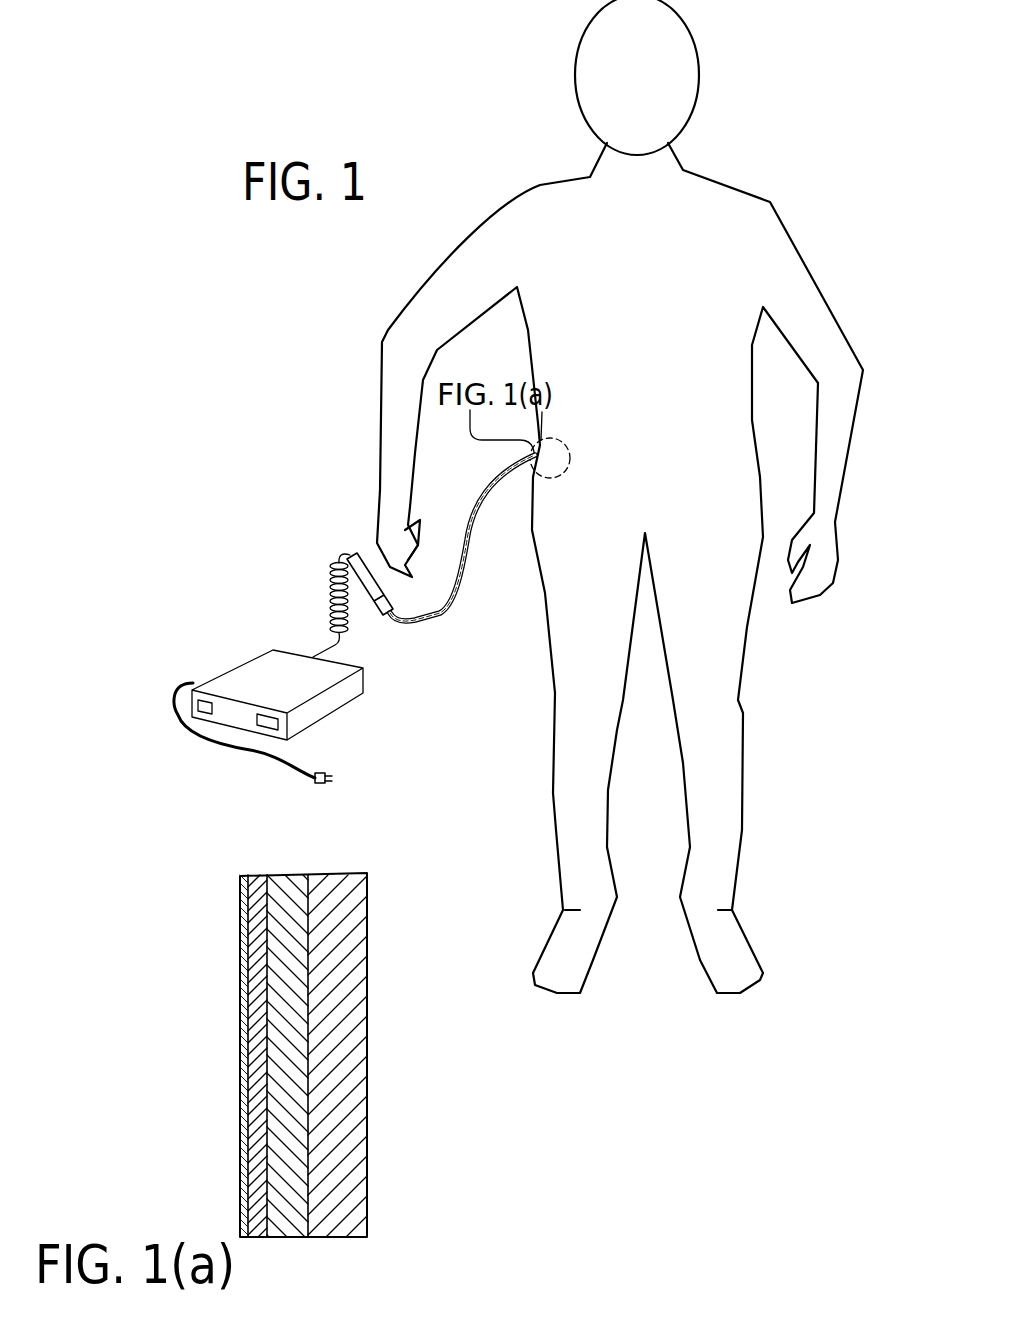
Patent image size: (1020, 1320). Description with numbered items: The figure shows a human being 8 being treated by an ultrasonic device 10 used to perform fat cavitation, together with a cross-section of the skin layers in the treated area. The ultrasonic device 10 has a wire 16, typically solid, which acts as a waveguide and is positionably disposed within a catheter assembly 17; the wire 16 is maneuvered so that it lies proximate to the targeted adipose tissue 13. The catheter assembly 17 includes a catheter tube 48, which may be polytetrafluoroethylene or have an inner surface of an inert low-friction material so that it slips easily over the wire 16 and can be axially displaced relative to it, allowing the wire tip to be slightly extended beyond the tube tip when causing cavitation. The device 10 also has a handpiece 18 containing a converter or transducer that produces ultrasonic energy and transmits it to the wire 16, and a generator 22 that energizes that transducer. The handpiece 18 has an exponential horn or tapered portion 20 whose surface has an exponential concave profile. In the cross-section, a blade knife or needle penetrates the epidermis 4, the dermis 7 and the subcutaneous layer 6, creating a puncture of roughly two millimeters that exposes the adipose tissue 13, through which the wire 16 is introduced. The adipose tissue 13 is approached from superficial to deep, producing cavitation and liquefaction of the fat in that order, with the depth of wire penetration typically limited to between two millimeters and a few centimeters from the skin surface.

In FIG. 1, the human being 8 is at (770, 202).
In FIG. 1, the ultrasonic device 10 is at (280, 588).
In FIG. 1, the generator 22 is at (267, 648).
In FIG. 1, the handpiece 18 is at (367, 550).
In FIG. 1, the wire 16 is at (467, 540).
In FIG. 1, the catheter assembly 17 is at (413, 614).
In FIG. 1, the catheter tube 48 is at (437, 617).
In FIG. 1, the exponential horn or tapered portion 20 is at (383, 612).
In FIG. 1a, the epidermis 4 is at (240, 957).
In FIG. 1a, the dermis 7 is at (248, 1037).
In FIG. 1a, the subcutaneous layer 6 is at (270, 1108).
In FIG. 1a, the adipose tissue 13 is at (320, 1185).